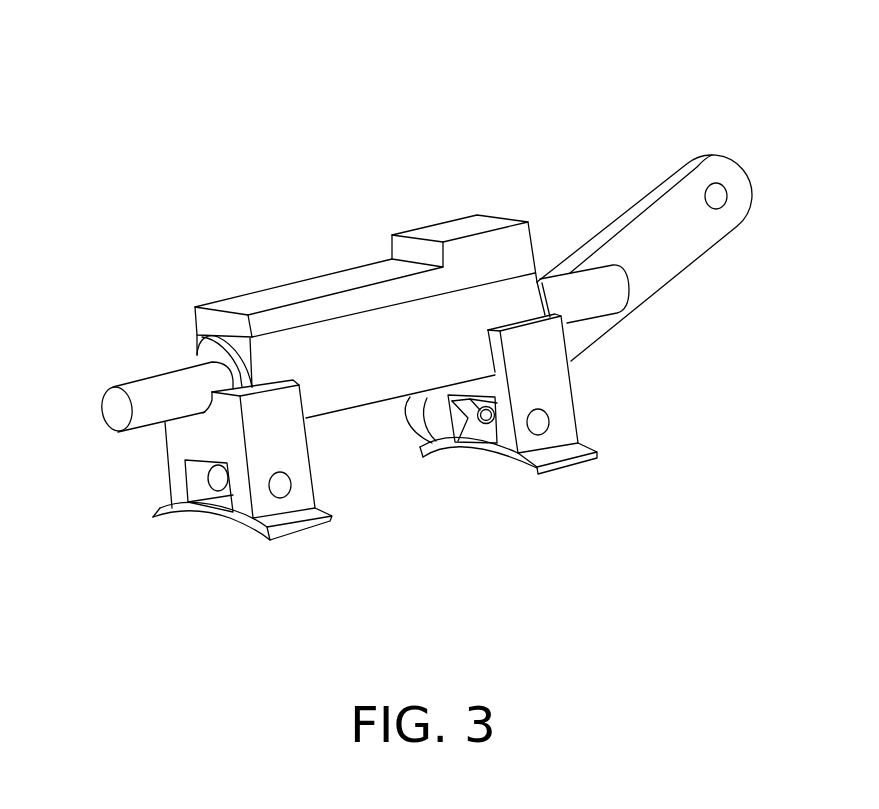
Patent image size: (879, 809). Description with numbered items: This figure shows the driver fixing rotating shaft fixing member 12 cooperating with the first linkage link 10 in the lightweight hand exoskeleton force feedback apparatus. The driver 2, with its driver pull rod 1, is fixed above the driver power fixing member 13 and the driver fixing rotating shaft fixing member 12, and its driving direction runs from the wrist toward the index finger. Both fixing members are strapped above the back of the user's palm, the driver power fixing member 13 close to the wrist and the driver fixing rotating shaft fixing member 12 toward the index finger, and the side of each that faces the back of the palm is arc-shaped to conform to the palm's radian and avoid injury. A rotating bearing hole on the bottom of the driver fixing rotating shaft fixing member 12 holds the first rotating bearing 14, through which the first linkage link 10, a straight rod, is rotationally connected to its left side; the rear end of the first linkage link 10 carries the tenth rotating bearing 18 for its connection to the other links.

The driver pull rod 1 is at (200, 392).
The driver 2 is at (455, 312).
The first linkage link 10 is at (652, 238).
The driver fixing rotating shaft fixing member 12 is at (550, 388).
The driver power fixing member 13 is at (280, 462).
The first rotating bearing 14 is at (480, 448).
The tenth rotating bearing 18 is at (719, 209).